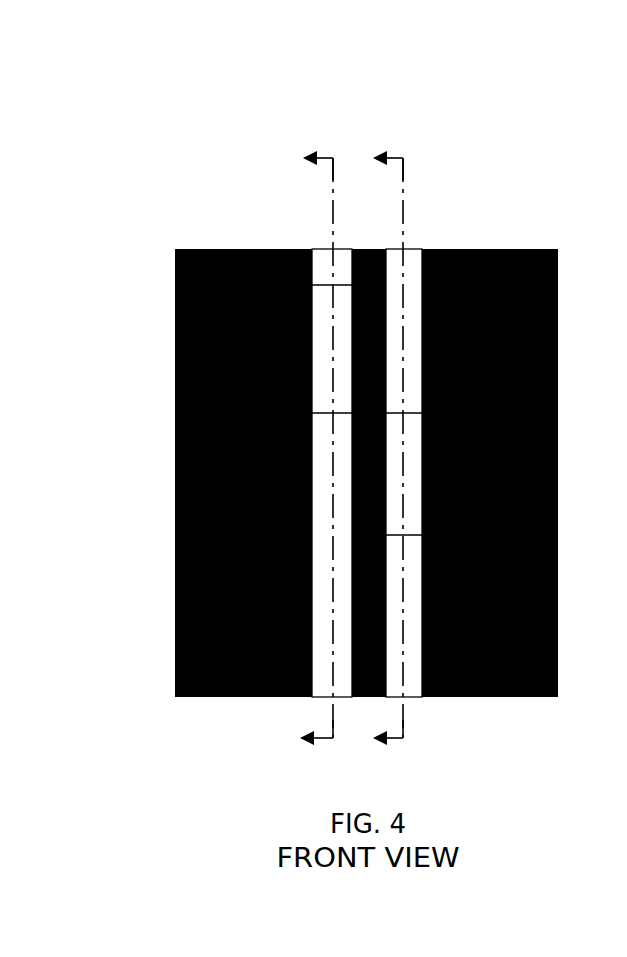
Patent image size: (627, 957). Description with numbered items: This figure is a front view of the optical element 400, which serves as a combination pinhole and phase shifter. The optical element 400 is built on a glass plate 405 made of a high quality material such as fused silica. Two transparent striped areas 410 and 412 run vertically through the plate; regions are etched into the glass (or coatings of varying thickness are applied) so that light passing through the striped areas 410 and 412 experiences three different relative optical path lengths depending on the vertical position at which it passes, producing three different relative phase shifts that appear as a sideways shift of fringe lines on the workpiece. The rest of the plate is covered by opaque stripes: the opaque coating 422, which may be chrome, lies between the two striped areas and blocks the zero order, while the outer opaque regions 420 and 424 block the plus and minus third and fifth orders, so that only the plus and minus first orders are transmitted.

The optical element 400 is at (323, 402).
The glass plate 405 is at (352, 437).
The striped area 410 is at (322, 249).
The striped area 412 is at (412, 249).
The opaque region 420 is at (207, 249).
The opaque coating 422 is at (367, 249).
The opaque region 424 is at (527, 249).